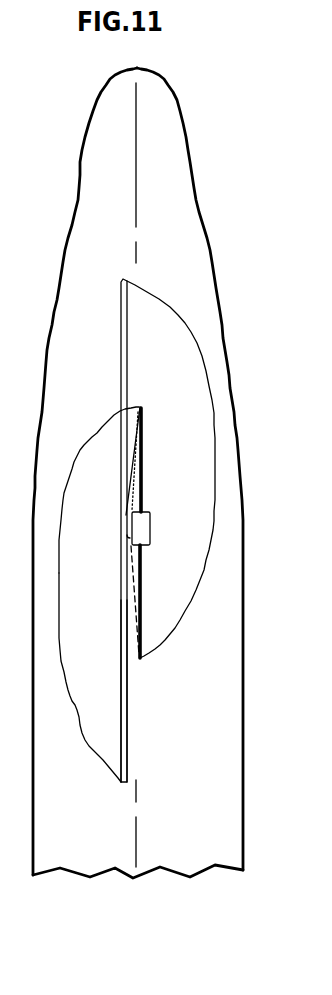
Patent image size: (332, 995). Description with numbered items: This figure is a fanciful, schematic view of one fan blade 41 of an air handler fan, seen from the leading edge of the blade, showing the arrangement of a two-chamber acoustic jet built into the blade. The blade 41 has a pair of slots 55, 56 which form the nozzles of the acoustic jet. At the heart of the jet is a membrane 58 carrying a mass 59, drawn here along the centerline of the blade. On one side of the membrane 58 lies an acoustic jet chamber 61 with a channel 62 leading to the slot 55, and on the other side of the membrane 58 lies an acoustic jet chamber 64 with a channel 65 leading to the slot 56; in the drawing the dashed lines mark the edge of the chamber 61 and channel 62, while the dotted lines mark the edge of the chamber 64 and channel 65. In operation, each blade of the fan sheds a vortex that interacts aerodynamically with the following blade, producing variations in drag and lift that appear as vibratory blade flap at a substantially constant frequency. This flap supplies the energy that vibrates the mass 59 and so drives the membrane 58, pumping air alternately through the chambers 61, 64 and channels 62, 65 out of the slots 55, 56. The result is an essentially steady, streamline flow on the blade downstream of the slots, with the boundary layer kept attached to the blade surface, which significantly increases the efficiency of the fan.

The blade 41 is at (91, 195).
The slot 55 is at (124, 347).
The slot 56 is at (126, 745).
The membrane 58 is at (142, 598).
The mass 59 is at (151, 533).
The acoustic jet chamber 61 is at (192, 475).
The channel 62 is at (188, 385).
The acoustic jet chamber 64 is at (108, 523).
The channel 65 is at (107, 627).